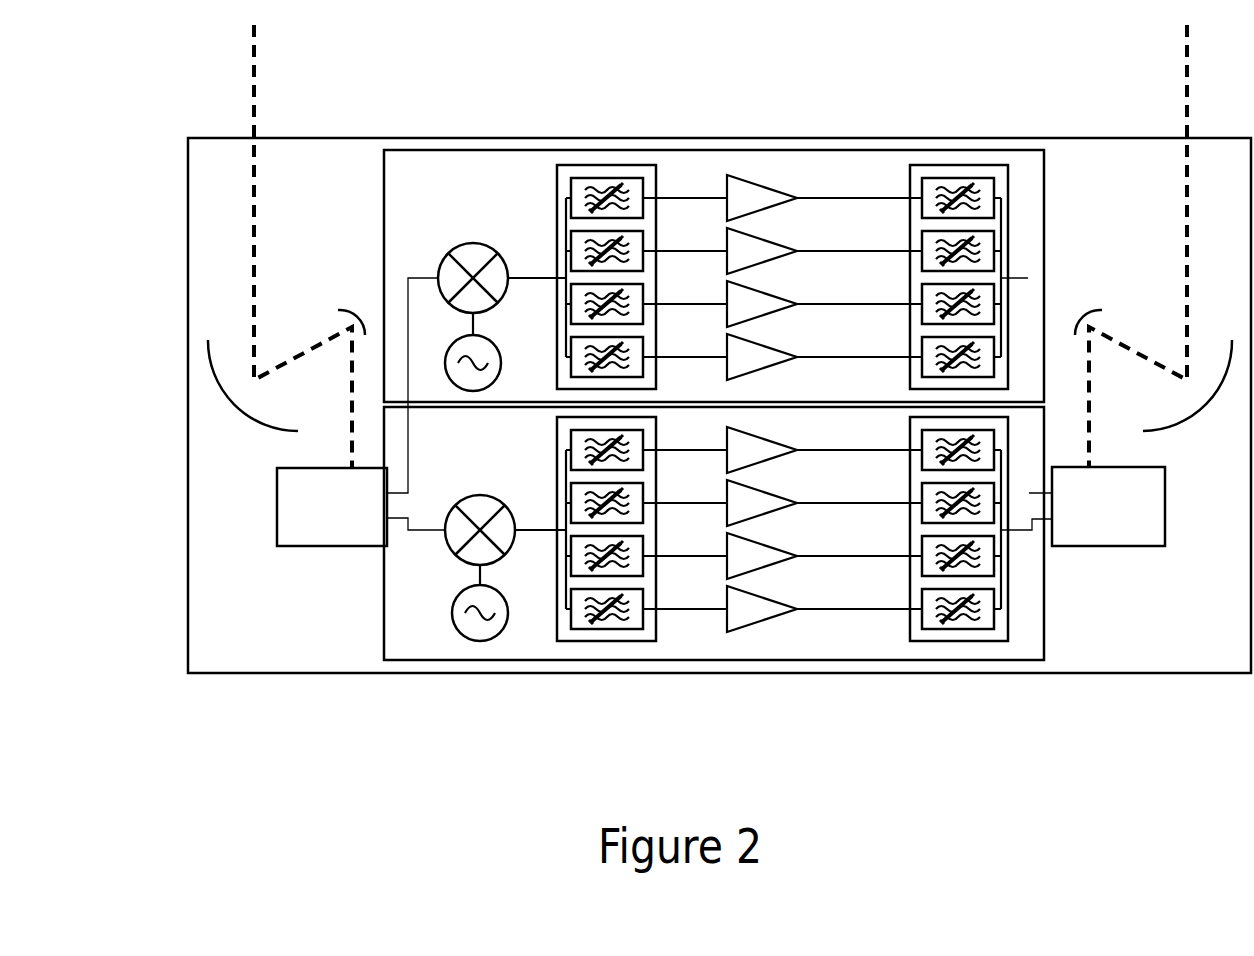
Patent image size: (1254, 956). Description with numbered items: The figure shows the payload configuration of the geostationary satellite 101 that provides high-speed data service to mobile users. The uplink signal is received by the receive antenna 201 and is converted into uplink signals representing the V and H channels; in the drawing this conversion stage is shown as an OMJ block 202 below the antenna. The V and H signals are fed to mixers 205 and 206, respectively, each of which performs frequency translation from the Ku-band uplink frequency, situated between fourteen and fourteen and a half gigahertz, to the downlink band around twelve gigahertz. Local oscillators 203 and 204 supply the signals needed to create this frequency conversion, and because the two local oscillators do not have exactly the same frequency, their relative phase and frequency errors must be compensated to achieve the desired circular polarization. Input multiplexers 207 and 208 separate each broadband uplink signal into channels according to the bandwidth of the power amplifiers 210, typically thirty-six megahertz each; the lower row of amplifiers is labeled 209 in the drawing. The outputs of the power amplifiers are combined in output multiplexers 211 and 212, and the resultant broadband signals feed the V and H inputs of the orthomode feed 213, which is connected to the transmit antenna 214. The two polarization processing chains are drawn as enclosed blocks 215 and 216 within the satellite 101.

The geostationary satellite 101 is at (222, 673).
The receive antenna 201 is at (225, 407).
The first orthomode junction (OMJ) 202 is at (327, 547).
The local oscillator 203 is at (462, 640).
The local oscillator 204 is at (450, 340).
The mixer 205 is at (458, 553).
The mixer 206 is at (466, 248).
The input multiplexer 207 is at (600, 641).
The input multiplexer 208 is at (617, 165).
The second amplifier bank 209 is at (752, 630).
The power amplifier 210 is at (750, 163).
The output multiplexer 211 is at (935, 641).
The output multiplexer 212 is at (957, 160).
The orthomode feed 213 is at (1097, 562).
The second antenna 214 is at (1199, 420).
The second channel processing unit 215 is at (407, 663).
The first channel processing unit 216 is at (507, 150).